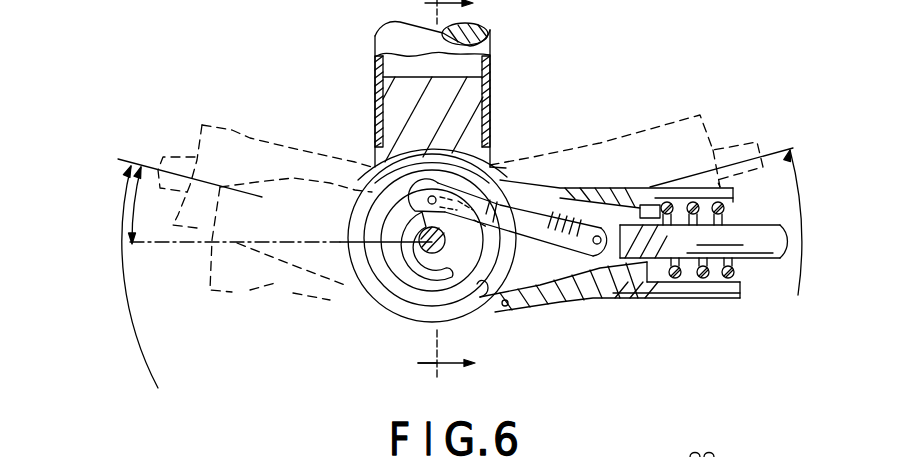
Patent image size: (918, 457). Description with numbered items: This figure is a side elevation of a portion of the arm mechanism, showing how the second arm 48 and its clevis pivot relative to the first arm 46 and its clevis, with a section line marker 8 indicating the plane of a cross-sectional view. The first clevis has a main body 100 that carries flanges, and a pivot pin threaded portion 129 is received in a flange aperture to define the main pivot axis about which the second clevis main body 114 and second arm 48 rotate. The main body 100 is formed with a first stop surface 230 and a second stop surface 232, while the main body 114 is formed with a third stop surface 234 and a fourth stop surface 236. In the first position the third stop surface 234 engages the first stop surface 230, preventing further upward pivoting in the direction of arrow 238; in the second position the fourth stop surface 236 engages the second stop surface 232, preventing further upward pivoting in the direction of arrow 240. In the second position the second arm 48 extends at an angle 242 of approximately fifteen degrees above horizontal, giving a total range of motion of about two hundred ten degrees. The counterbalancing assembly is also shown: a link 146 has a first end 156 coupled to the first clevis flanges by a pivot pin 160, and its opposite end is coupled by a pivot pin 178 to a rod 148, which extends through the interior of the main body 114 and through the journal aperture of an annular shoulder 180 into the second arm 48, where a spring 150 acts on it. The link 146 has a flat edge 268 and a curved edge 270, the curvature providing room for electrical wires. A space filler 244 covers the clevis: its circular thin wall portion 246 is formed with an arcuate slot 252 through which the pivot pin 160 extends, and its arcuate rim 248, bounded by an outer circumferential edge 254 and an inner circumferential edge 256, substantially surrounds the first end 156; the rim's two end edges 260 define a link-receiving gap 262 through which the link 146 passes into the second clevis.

The section line 8- 8 is at (438, 382).
The first arm 46 is at (388, 42).
The second arm 48 is at (250, 140).
The main body 100 is at (398, 110).
The main body 114 is at (607, 299).
The threaded portion 129 is at (443, 248).
The link 146 is at (550, 193).
The rod 148 is at (750, 230).
The spring 150 is at (737, 273).
The first end 156 is at (420, 240).
The pivot pin 160 is at (413, 200).
The pivot pin 178 is at (600, 229).
The annular shoulder 180 is at (658, 278).
The first stop surface 230 is at (492, 152).
The second stop surface 232 is at (374, 162).
The third stop surface 234 is at (502, 172).
The fourth stop surface 236 is at (508, 296).
The arrow 238 is at (798, 295).
The arrow 240 is at (139, 342).
The angle 242 is at (135, 210).
The space filler 244 is at (348, 273).
The circular thin wall portion 246 is at (390, 305).
The arcuate rim 248 is at (461, 321).
The arcuate slot 252 is at (370, 245).
The outer circumferential edge 254 is at (410, 324).
The inner circumferential edge 256 is at (392, 256).
The end edges 260 is at (483, 293).
The link-receiving gap 262 is at (580, 299).
The flat edge 268 is at (535, 221).
The curved edge 270 is at (501, 253).